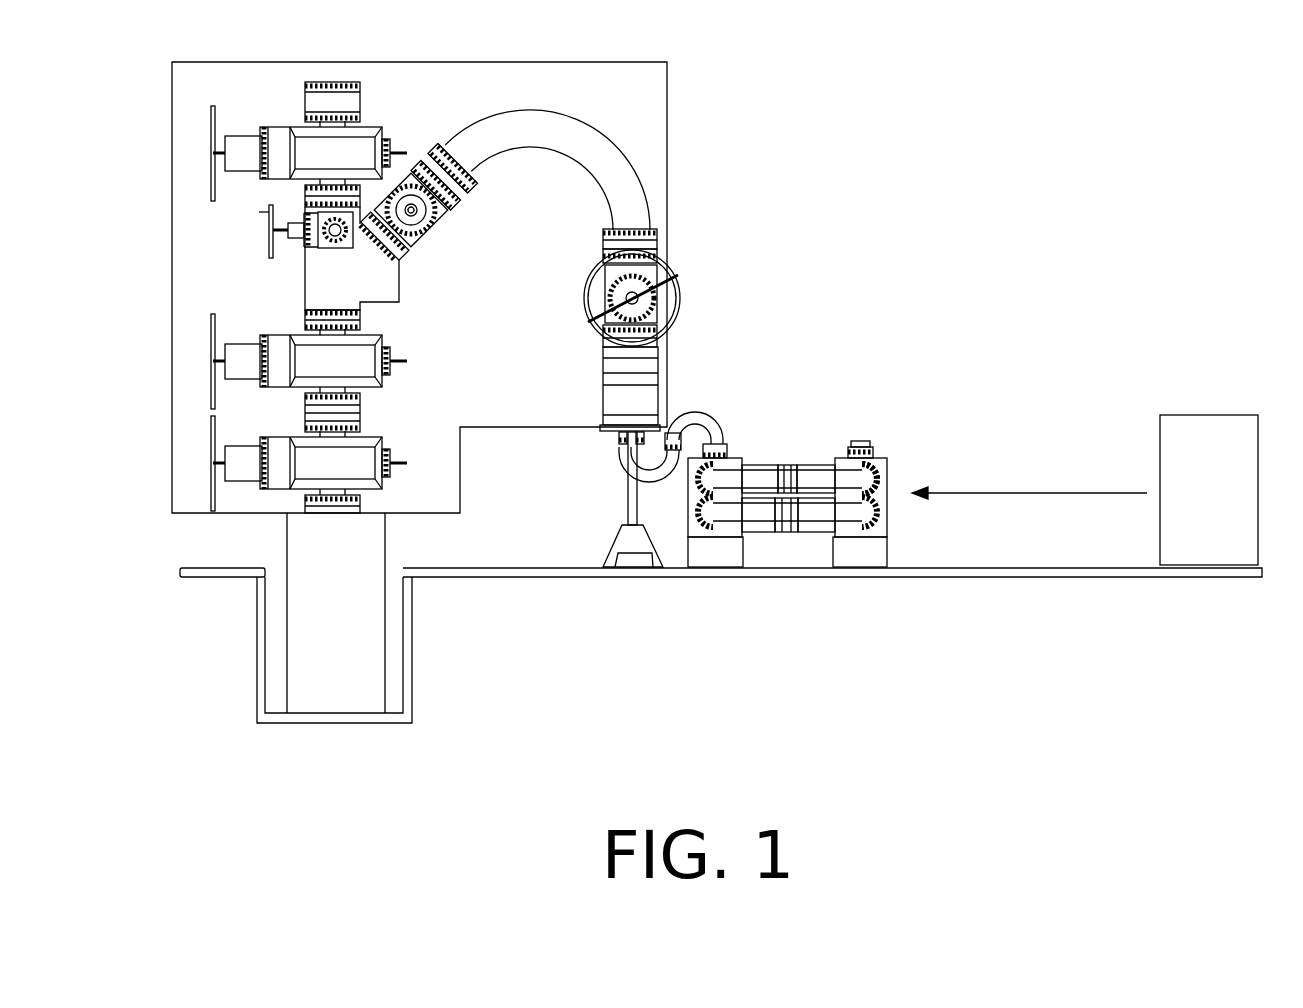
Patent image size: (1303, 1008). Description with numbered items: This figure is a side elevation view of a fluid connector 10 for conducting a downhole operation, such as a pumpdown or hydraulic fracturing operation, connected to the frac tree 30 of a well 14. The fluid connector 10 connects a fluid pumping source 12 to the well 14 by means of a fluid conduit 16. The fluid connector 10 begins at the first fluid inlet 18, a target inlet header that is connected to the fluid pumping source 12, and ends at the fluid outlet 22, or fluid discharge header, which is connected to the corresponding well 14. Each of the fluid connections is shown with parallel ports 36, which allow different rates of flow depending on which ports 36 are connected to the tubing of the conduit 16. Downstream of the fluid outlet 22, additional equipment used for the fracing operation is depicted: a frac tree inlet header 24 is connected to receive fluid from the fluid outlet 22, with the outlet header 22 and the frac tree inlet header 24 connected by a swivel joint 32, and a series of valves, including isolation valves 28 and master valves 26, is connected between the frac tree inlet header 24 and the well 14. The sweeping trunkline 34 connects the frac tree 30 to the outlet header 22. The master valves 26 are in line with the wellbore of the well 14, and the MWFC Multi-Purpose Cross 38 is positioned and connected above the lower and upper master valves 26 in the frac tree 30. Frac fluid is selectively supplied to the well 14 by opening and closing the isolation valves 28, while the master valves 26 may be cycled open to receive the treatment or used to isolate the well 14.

The fluid connector 10 is at (826, 473).
The fluid pumping source 12 is at (1201, 450).
The well 14 is at (315, 635).
The fluid conduit 16 is at (833, 491).
The first fluid inlet 18 is at (890, 468).
The fluid outlet 22 is at (693, 552).
The frac tree inlet header 24 is at (637, 392).
The master valve 26 is at (315, 362).
The isolation valve 28 is at (425, 230).
The frac tree 30 is at (328, 265).
The swivel joint 32 is at (657, 480).
The sweeping trunkline 34 is at (597, 140).
The parallel port 36 is at (720, 478).
The MWFC Multi-Purpose Cross 38 is at (313, 277).